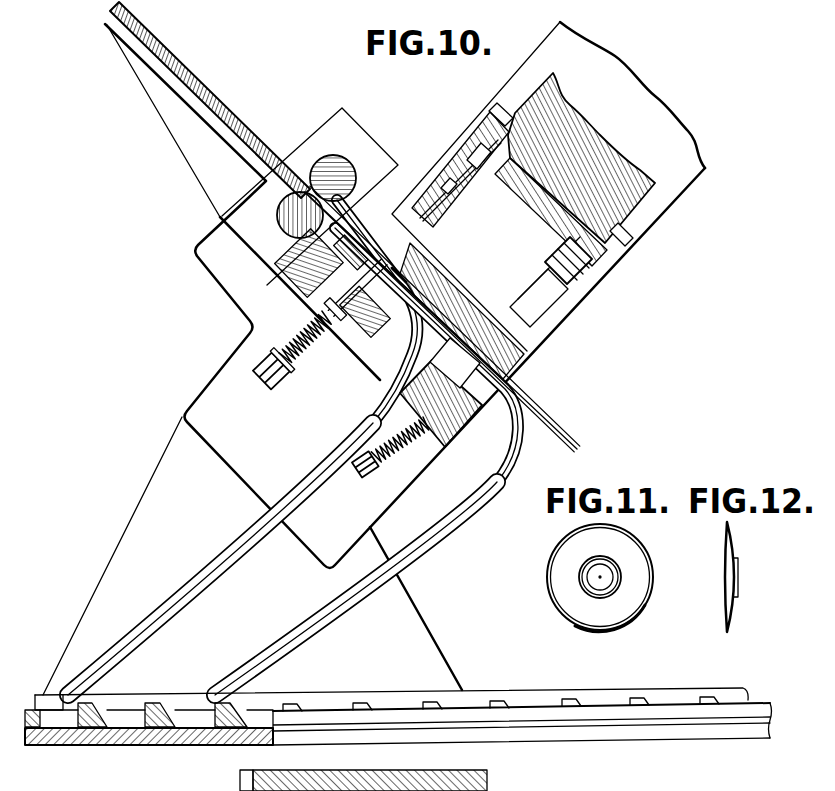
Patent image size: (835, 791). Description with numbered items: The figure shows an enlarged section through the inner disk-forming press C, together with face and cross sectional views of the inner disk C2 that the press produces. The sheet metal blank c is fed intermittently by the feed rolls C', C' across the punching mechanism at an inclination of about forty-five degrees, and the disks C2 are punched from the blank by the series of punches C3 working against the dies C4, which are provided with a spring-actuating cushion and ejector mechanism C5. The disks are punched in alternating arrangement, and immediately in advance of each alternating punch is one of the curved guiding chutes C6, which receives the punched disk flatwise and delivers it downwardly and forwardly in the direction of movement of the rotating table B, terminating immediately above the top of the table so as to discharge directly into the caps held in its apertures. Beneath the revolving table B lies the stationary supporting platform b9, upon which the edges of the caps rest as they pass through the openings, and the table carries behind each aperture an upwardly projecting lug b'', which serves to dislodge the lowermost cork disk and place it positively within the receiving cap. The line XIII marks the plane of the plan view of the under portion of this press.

In FIG. 10, the blank c is at (273, 147).
In FIG. 10, the disk press C is at (548, 186).
In FIG. 10, the feed rolls C' is at (310, 196).
In FIG. 11, the disks C2 is at (553, 577).
In FIG. 12, the disks C2 is at (741, 577).
In FIG. 10, the punches C3 is at (445, 213).
In FIG. 10, the dies C4 is at (364, 348).
In FIG. 10, the spring-actuating cushion and ejector mechanism C5 is at (405, 277).
In FIG. 10, the curved guiding chutes C6 is at (358, 430).
In FIG. 10, the section line XIII. XIII. XIII is at (420, 383).
In FIG. 10, the rotating table B is at (748, 703).
In FIG. 10, the upwardly projecting lug b'' is at (501, 687).
In FIG. 10, the stationary supporting platform b9 is at (140, 746).